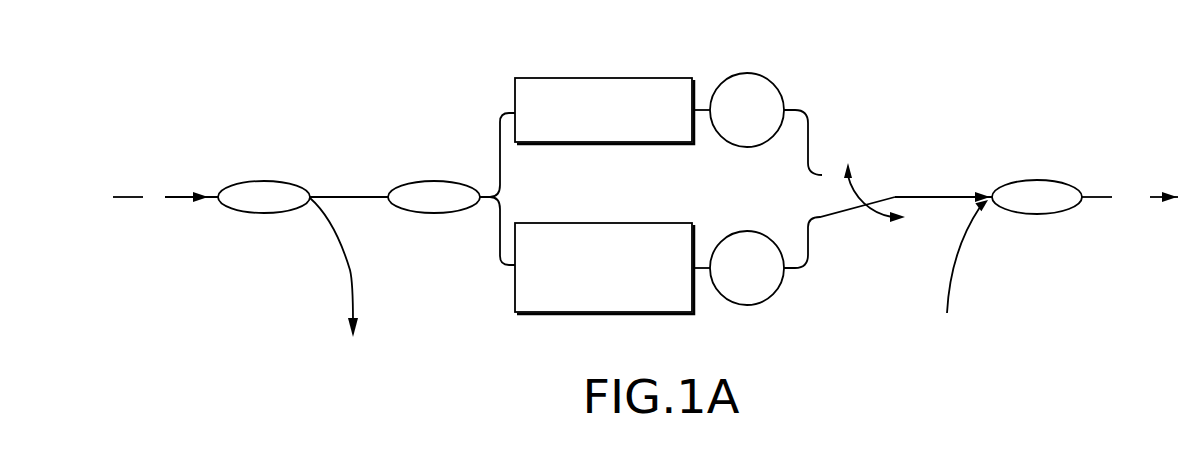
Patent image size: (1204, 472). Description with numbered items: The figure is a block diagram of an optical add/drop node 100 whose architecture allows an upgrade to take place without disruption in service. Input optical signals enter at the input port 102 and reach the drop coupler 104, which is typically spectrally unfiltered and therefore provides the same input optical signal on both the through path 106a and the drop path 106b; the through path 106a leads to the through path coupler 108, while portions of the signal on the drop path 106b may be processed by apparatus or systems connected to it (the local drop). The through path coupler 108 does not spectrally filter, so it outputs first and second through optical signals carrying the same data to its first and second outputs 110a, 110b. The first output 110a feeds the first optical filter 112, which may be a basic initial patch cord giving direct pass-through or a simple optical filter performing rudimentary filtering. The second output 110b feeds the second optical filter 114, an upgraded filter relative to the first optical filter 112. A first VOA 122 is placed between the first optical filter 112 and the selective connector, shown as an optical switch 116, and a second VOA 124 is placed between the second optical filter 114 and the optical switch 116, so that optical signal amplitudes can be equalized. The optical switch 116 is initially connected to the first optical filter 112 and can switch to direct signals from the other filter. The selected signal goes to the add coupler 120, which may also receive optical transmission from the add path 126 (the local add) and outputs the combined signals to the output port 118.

The optical node 100 is at (665, 48).
The input port 102 is at (126, 197).
The drop coupler 104 is at (266, 147).
The through path 106a is at (348, 197).
The drop path 106b is at (340, 243).
The through path coupler 108 is at (433, 148).
The first output 110a is at (502, 156).
The second output 110b is at (502, 223).
The first optical filter 112 is at (533, 314).
The second optical filter 114 is at (547, 78).
The optical switch 116 is at (862, 219).
The output port 118 is at (1133, 178).
The add coupler 120 is at (1032, 148).
The first VOA 122 is at (768, 298).
The second VOA 124 is at (761, 72).
The add path 126 is at (953, 272).